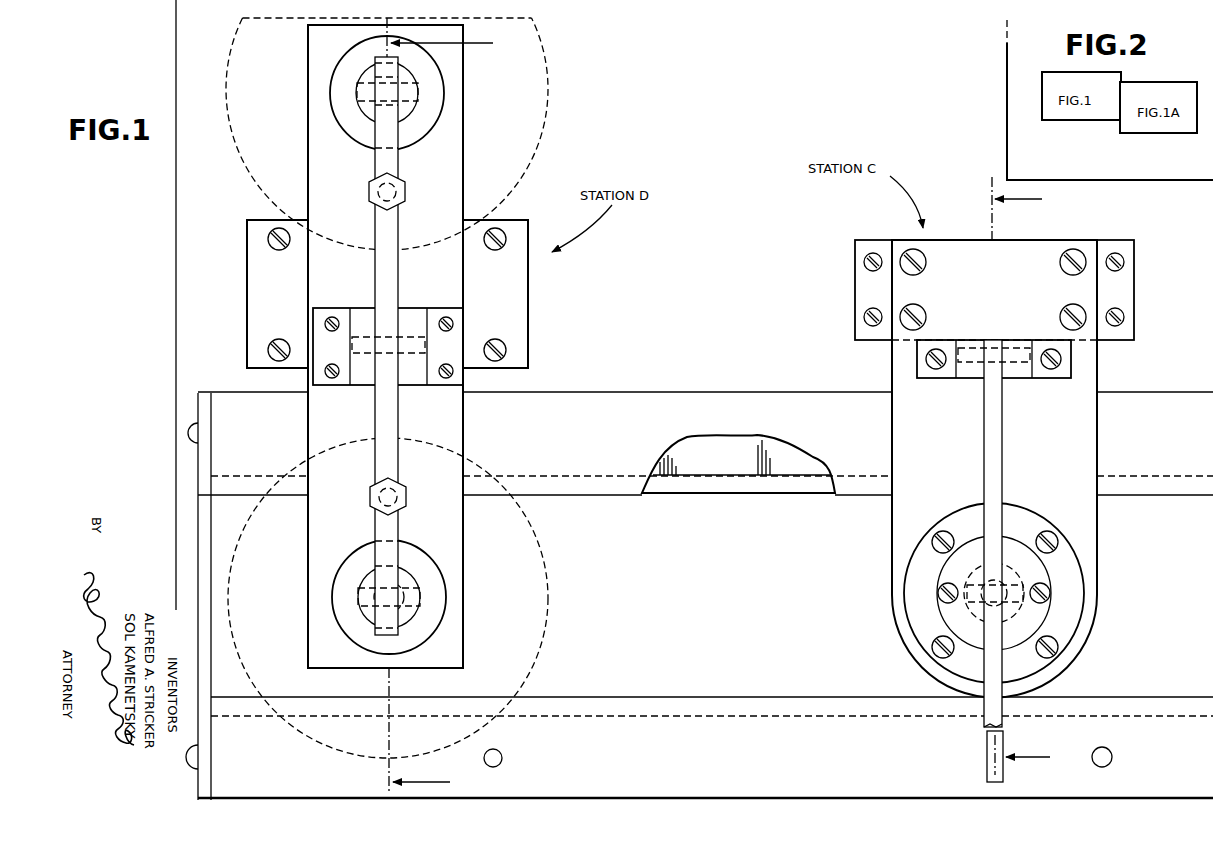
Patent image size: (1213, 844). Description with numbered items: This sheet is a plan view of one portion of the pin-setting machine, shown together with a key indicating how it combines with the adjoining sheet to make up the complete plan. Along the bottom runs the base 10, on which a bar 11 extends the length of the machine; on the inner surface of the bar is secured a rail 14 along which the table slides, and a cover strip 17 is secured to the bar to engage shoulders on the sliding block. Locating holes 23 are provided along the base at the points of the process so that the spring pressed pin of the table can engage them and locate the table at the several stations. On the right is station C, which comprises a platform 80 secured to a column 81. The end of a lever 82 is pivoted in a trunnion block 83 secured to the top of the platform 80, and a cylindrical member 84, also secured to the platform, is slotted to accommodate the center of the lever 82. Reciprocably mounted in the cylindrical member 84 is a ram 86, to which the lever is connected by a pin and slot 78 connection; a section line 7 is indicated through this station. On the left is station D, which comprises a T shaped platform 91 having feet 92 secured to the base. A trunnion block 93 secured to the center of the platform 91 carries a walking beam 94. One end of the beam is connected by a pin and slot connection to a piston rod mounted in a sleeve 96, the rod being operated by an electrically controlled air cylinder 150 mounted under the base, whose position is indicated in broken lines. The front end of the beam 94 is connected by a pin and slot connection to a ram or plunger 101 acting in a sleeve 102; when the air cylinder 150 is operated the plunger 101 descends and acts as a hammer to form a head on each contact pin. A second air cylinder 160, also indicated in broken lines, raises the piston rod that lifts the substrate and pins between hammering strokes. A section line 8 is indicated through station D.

The section line 7- 7 is at (1031, 476).
The section line 8- 8 is at (449, 407).
The base 10 is at (686, 273).
The bar 11 is at (706, 446).
The rail 14 is at (720, 486).
The cover strips 17 is at (663, 398).
The locating hole 23 is at (502, 752).
The pin and slot connection 78 is at (975, 603).
The platform 80 is at (1093, 508).
The column 81 is at (863, 248).
The lever 82 is at (997, 453).
The trunnion block 83 is at (963, 373).
The cylindrical member 84 is at (962, 520).
The ram 86 is at (1010, 586).
The T shaped platform 91 is at (455, 148).
The feet 92 is at (520, 303).
The trunnion block 93 is at (438, 382).
The walking beam 94 is at (390, 297).
The sleeve 96 is at (410, 137).
The ram or plunger 101 is at (372, 577).
The sleeve 102 is at (413, 555).
The air cylinder 150 is at (547, 107).
The air cylinder 160 is at (547, 570).